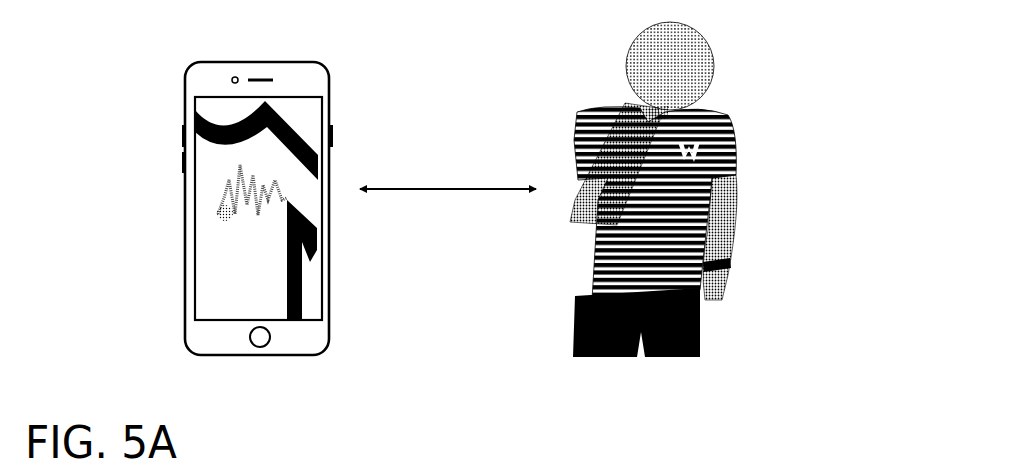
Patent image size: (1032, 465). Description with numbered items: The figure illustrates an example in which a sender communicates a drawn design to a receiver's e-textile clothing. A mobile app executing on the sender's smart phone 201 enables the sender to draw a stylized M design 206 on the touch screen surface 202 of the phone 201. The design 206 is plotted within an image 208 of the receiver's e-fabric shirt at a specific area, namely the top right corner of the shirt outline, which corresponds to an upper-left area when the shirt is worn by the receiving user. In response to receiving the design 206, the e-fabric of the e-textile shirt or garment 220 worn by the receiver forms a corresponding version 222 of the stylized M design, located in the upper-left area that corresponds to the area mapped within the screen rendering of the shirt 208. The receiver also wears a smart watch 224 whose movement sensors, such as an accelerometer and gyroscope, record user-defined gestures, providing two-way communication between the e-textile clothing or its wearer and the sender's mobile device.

The smart phone 201 is at (183, 190).
The touch screen surface 202 is at (202, 308).
The stylized M design 206 is at (262, 188).
The image of the receiver's e-fabric shirt 208 is at (232, 122).
The e-textile shirt (garment) 220 is at (612, 108).
The corresponding version of the stylized M design 222 is at (690, 155).
The smart watch 224 is at (720, 298).